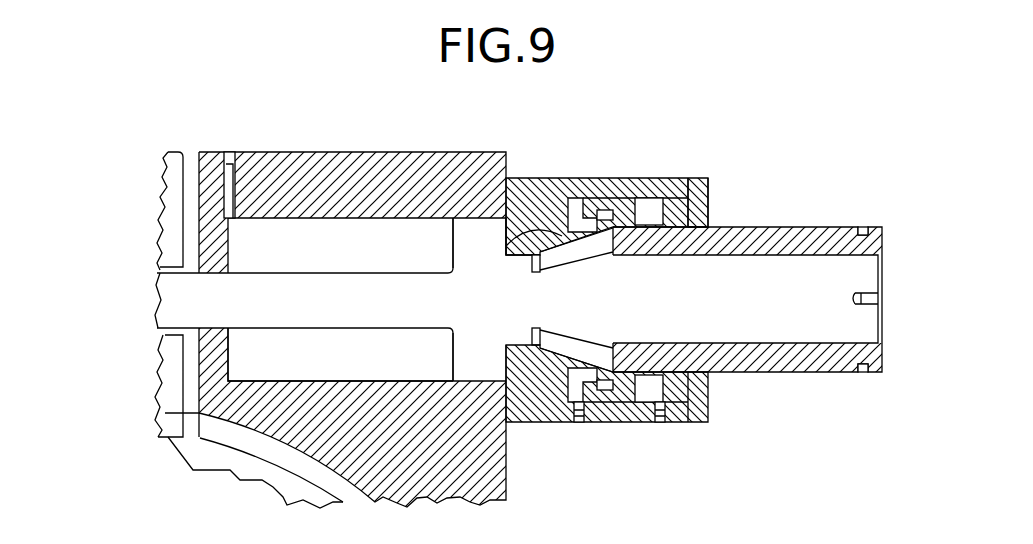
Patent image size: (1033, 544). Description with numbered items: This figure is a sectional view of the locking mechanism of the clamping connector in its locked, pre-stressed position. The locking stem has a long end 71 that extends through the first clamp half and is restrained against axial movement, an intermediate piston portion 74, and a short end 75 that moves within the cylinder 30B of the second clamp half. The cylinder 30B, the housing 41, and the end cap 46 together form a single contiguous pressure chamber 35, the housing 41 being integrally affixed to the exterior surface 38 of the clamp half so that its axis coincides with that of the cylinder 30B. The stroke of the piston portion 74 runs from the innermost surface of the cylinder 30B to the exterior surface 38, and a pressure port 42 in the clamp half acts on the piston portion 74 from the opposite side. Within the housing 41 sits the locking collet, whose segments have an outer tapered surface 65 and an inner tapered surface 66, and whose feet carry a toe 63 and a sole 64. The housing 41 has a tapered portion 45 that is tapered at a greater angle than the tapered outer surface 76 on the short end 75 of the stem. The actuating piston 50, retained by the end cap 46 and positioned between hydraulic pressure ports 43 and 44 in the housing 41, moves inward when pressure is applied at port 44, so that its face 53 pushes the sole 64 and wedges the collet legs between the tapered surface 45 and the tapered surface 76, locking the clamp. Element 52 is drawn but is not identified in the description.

The cylinder 30B is at (325, 364).
The pressure chamber 35 is at (438, 363).
The exterior surface 38 is at (507, 152).
The housing 41 is at (533, 178).
The pressure port 42 is at (229, 152).
The hydraulic pressure port 43 is at (580, 422).
The hydraulic pressure port 44 is at (660, 422).
The tapered portion 45 is at (513, 241).
The end cap 46 is at (708, 188).
The actuating piston 50 is at (803, 214).
The seal 52 is at (580, 198).
The face 53 is at (646, 224).
The toe 63 is at (620, 200).
The sole 64 is at (607, 252).
The outer tapered surface 65 is at (534, 221).
The inner tapered surface 66 is at (565, 262).
The long end 71 is at (320, 309).
The piston portion 74 is at (462, 309).
The short end 75 is at (726, 307).
The tapered outer surface 76 is at (536, 272).